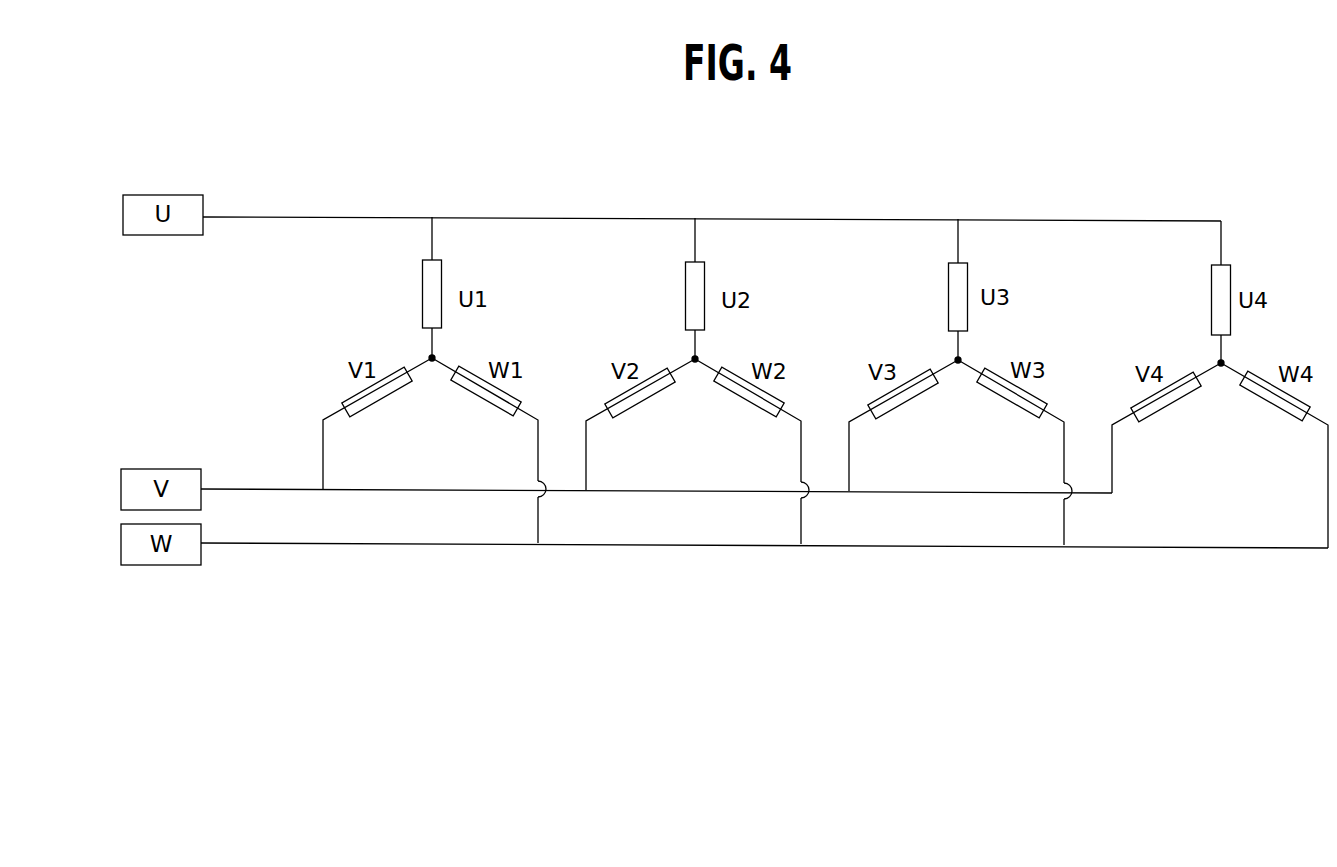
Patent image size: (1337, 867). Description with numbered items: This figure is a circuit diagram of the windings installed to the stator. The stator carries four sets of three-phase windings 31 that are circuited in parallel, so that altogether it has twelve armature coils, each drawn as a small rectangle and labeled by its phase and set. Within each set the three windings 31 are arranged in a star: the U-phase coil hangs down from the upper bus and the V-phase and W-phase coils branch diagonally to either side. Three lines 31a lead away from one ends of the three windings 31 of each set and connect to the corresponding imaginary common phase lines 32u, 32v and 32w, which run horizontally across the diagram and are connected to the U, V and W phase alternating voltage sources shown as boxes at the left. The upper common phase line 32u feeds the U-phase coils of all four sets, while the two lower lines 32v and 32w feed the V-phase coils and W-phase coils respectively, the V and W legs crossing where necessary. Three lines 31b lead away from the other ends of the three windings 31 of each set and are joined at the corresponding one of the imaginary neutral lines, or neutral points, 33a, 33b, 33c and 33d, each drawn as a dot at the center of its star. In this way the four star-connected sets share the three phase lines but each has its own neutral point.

The three-phase winding 31 is at (377, 397).
The line 31a is at (432, 240).
The line 31b is at (433, 343).
The imaginary common phase line 32u is at (830, 219).
The imaginary common phase line 32v is at (918, 492).
The imaginary common phase line 32w is at (706, 546).
The imaginary neutral line 33a is at (432, 361).
The imaginary neutral line 33b is at (695, 362).
The imaginary neutral line 33c is at (958, 363).
The imaginary neutral line 33d is at (1221, 366).